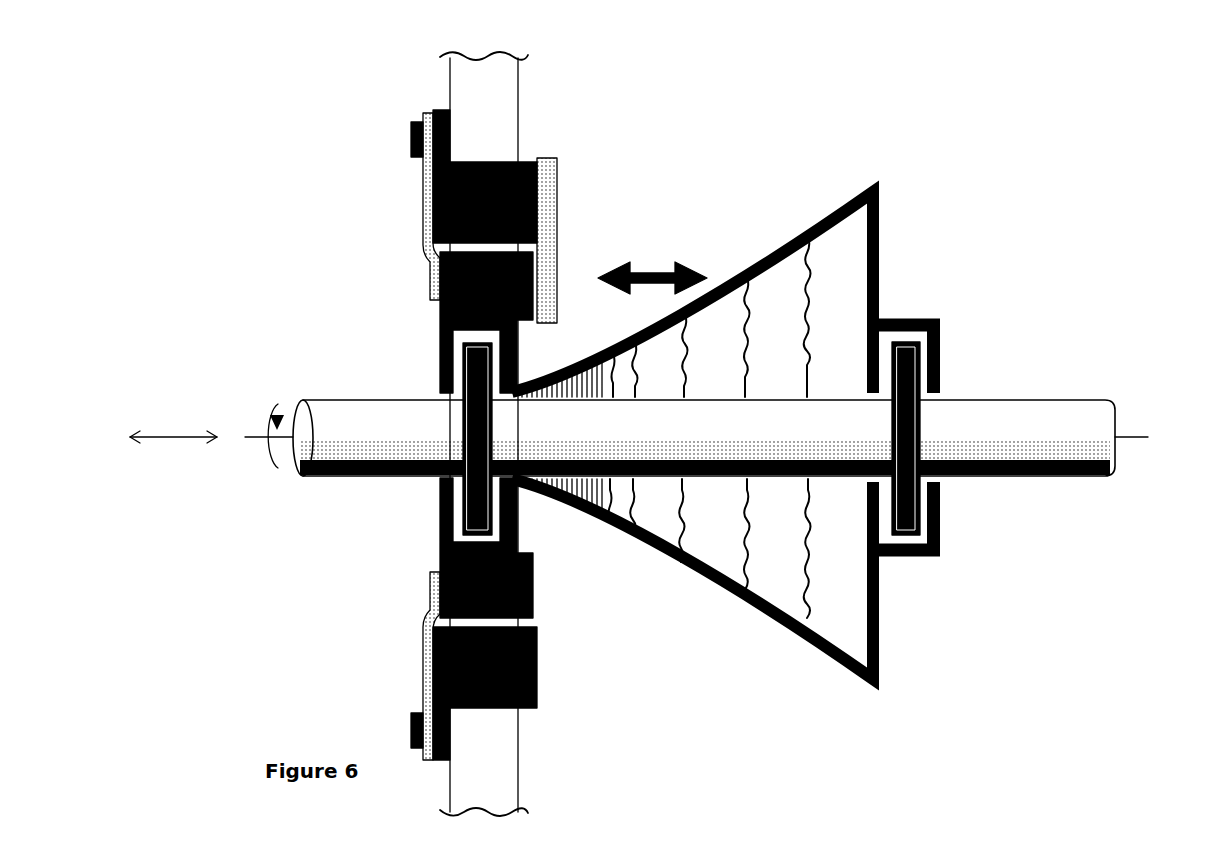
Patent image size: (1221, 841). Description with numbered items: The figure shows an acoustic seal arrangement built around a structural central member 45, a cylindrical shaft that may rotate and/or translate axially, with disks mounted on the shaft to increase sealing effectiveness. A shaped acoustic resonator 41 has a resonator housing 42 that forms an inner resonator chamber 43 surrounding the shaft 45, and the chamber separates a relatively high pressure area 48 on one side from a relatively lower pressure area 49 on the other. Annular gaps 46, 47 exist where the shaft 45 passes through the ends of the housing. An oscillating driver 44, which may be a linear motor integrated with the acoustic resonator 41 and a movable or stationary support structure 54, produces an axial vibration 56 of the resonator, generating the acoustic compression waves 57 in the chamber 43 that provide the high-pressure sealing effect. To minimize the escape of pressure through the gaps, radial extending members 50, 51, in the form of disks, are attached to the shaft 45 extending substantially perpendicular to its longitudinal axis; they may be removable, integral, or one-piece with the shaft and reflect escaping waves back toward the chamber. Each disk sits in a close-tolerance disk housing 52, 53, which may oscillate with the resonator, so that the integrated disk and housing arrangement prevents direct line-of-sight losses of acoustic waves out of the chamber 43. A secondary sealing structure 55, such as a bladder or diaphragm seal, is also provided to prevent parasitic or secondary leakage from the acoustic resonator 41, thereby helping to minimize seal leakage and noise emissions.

The shaped acoustic resonator 41 is at (948, 173).
The resonator housing 42 is at (785, 248).
The inner resonator chamber 43 is at (837, 578).
The oscillating driver 44 is at (560, 240).
The structural central member 45 is at (1108, 470).
The annular gap 46 is at (442, 482).
The annular gap 47 is at (940, 482).
The relatively high pressure area 48 is at (390, 355).
The relatively lower pressure area 49 is at (1018, 353).
The radial extending member 50 is at (442, 548).
The radial extending member 51 is at (912, 343).
The close-tolerance disk housing 52 is at (442, 340).
The close-tolerance disk housing 53 is at (940, 343).
The support structure 54 is at (442, 83).
The secondary sealing structure 55 is at (420, 220).
The axial vibration 56 is at (650, 270).
The acoustic compression waves 57 is at (743, 552).